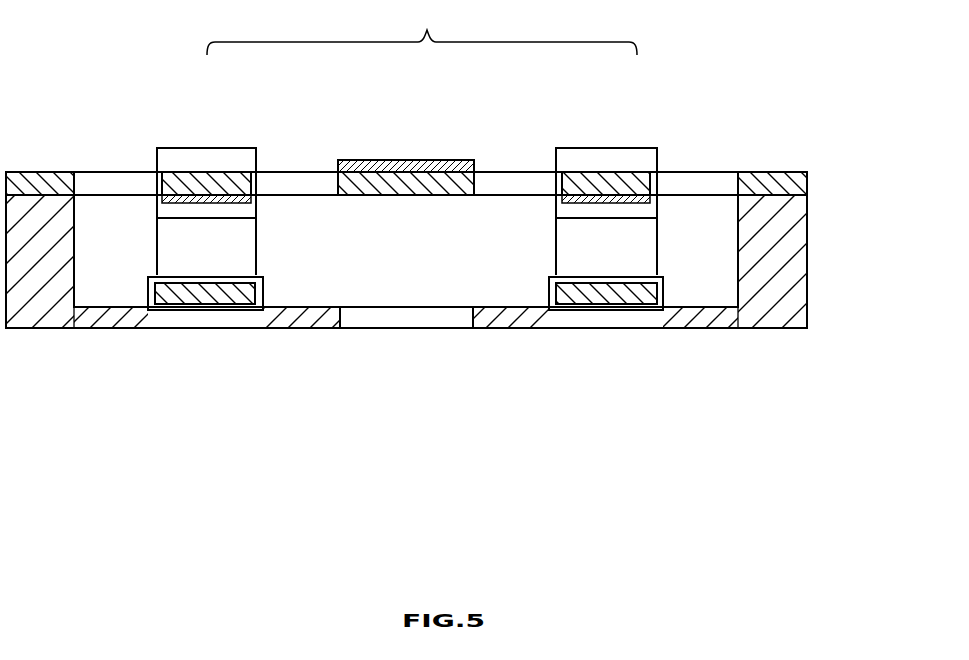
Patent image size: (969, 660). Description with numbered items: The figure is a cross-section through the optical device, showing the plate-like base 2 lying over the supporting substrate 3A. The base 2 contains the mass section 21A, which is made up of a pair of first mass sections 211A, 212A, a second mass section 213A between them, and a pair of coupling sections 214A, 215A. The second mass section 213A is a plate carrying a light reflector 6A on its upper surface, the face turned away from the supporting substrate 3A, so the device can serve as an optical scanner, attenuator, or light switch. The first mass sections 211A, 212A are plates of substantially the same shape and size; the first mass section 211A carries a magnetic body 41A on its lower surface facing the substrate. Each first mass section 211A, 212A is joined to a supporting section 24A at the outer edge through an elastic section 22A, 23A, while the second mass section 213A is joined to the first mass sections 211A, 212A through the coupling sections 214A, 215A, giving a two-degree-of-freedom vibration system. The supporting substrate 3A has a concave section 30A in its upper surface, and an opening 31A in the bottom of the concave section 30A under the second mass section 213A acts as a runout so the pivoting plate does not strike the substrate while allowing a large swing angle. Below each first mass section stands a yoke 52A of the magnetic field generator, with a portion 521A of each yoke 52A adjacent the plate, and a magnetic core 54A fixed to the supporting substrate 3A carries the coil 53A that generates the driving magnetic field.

The base 2 is at (812, 185).
The supporting substrate 3A is at (812, 257).
The light reflector 6A is at (380, 158).
The mass section 21A is at (422, 31).
The first mass section 211A is at (218, 173).
The first mass section 212A is at (597, 176).
The second mass section 213A is at (426, 176).
The coupling section 214A is at (292, 178).
The coupling section 215A is at (508, 178).
The elastic section 22A is at (93, 186).
The elastic section 23A is at (703, 188).
The supporting section 24A is at (36, 172).
The concave section 30A is at (446, 260).
The opening 31A is at (382, 318).
The magnetic body 41A is at (180, 178).
The upper connection portion 521A is at (163, 160).
The yoke 52A is at (180, 252).
The coil 53A is at (233, 306).
The magnetic core 54A is at (187, 292).